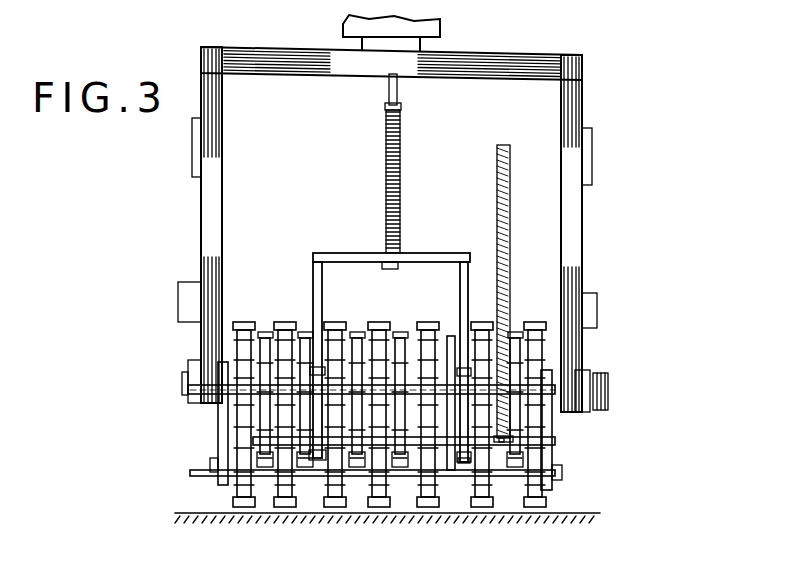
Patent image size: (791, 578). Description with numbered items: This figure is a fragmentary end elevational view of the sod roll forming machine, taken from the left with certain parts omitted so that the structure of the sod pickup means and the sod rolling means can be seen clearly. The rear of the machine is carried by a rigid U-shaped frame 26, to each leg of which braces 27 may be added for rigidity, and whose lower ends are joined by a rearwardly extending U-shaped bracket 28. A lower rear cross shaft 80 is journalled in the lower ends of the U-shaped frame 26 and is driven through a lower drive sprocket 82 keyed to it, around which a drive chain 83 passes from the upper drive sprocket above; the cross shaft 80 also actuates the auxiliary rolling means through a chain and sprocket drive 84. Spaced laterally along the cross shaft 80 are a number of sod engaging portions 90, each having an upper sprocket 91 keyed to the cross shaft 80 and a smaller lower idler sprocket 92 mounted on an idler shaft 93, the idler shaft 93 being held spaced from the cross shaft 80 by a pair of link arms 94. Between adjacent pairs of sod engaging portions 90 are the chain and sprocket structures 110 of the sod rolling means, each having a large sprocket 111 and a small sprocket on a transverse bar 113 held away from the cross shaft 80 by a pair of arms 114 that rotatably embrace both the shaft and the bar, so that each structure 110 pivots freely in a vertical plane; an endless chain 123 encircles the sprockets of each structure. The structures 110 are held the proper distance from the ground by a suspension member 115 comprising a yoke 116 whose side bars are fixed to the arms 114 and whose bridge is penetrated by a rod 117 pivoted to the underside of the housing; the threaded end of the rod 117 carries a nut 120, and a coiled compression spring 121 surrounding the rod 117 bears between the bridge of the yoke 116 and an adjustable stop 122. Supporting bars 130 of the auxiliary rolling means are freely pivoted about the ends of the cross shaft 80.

The U-shaped frame 26 is at (578, 218).
The braces 27 is at (592, 165).
The U-shaped bracket 28 is at (178, 295).
The lower rear cross shaft 80 is at (178, 400).
The lower drive sprocket 82 is at (500, 442).
The drive chain 83 is at (510, 192).
The chain and sprocket drive 84 is at (616, 395).
The sod engaging portions 90 is at (283, 506).
The upper sprocket 91 is at (552, 436).
The lower sprocket 92 is at (462, 464).
The idler shaft 93 is at (562, 476).
The link arms 94 is at (220, 442).
The chain and sprocket structures 110 is at (306, 325).
The large sprocket 111 is at (256, 332).
The transverse bar 113 is at (400, 468).
The arms 114 is at (305, 468).
The suspension member 115 is at (386, 148).
The yoke 116 is at (340, 256).
The rod 117 is at (390, 90).
The nut 120 is at (396, 268).
The coiled compression spring 121 is at (398, 186).
The adjustable stop 122 is at (392, 106).
The endless chain 123 is at (405, 336).
The supporting bars 130 is at (190, 365).